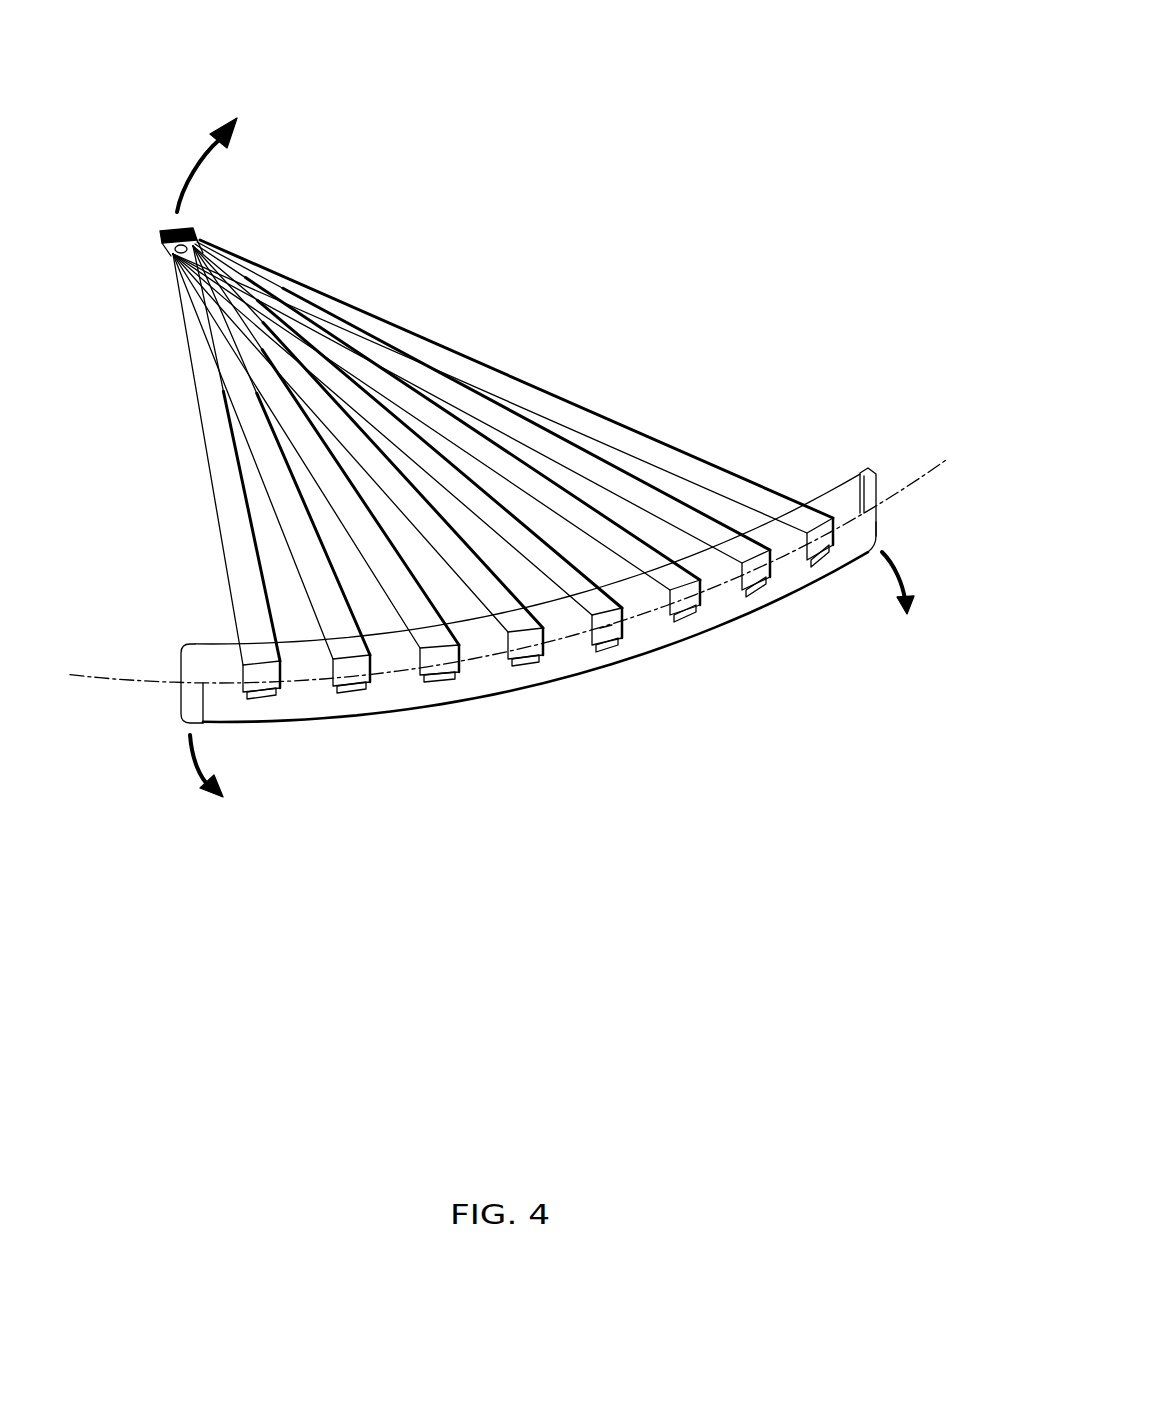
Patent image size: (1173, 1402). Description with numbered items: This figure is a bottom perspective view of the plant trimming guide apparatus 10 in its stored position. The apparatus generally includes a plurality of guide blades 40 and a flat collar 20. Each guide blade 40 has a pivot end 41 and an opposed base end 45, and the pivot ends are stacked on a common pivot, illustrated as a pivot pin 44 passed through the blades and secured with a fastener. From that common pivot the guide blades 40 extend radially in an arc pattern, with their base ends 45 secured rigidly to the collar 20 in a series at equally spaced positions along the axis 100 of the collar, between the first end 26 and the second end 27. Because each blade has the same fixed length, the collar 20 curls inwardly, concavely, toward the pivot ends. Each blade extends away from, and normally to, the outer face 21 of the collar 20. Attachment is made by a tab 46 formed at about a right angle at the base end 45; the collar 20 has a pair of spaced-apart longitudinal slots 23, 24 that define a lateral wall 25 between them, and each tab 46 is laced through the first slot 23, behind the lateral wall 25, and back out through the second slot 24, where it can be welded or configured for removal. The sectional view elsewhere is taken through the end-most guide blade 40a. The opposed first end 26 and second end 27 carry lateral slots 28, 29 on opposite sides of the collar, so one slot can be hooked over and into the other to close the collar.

The plant trimming guide apparatus 10 is at (622, 135).
The collar 20 is at (292, 722).
The outer face 21 is at (395, 695).
The first longitudinal slot 23 is at (575, 614).
The second longitudinal slot 24 is at (584, 657).
The lateral wall 25 is at (608, 630).
The first end 26 is at (877, 525).
The second end 27 is at (181, 657).
The lateral slot 28 is at (857, 483).
The lateral slot 29 is at (197, 706).
The guide blades 40 is at (303, 382).
The end-most guide blade 40a is at (230, 502).
The pivot end 41 is at (197, 267).
The pivot pin 44 is at (170, 253).
The base end 45 is at (600, 598).
The tab 46 is at (607, 647).
The axis 100 is at (940, 452).